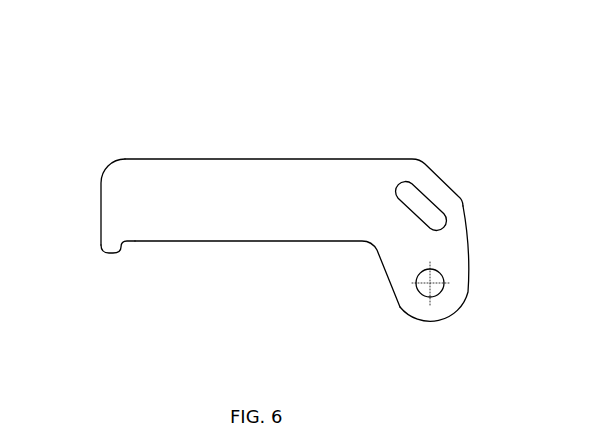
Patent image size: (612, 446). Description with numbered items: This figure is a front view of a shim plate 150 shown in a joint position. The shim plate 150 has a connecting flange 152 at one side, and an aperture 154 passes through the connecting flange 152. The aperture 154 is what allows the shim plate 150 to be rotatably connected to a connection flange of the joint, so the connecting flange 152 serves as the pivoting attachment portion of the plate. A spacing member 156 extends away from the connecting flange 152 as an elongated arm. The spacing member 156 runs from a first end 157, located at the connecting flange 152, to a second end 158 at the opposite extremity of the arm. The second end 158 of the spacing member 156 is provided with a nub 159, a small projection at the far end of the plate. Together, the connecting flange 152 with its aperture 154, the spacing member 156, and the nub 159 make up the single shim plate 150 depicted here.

The shim plate 150 is at (373, 88).
The connecting flange 152 is at (468, 293).
The aperture 154 is at (432, 282).
The spacing member 156 is at (270, 185).
The first end 157 is at (453, 194).
The second end 158 is at (102, 205).
The nub 159 is at (122, 247).